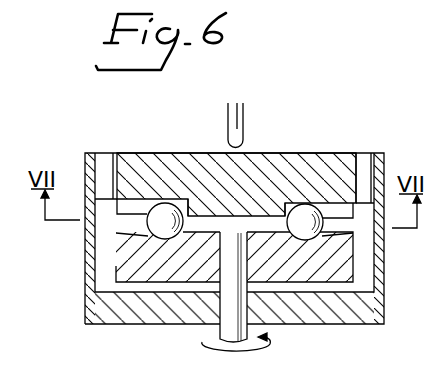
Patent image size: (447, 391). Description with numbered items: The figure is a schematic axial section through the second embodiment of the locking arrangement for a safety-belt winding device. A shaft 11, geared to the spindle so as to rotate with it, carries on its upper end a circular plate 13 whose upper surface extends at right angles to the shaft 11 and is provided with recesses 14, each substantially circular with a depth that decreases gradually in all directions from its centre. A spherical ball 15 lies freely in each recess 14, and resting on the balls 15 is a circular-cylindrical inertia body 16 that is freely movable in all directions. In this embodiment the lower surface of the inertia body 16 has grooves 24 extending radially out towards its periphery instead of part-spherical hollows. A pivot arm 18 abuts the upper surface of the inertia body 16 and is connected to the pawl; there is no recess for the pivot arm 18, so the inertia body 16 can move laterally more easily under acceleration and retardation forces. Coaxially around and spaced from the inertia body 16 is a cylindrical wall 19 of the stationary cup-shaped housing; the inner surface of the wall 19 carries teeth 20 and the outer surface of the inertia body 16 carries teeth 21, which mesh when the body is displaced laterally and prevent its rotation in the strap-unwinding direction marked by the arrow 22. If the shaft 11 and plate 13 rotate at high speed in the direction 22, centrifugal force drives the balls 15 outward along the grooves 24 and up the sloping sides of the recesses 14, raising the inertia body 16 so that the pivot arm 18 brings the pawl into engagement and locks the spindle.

The shaft 11 is at (219, 327).
The circular plate 13 is at (308, 275).
The recesses 14 is at (108, 257).
The balls 15 is at (148, 228).
The inertia body 16 is at (199, 160).
The pivot arm 18 is at (244, 118).
The cylindrical wall 19 is at (92, 256).
The teeth 20 is at (93, 152).
The teeth 21 is at (113, 153).
The arrows 22 is at (247, 345).
The grooves 24 is at (133, 205).